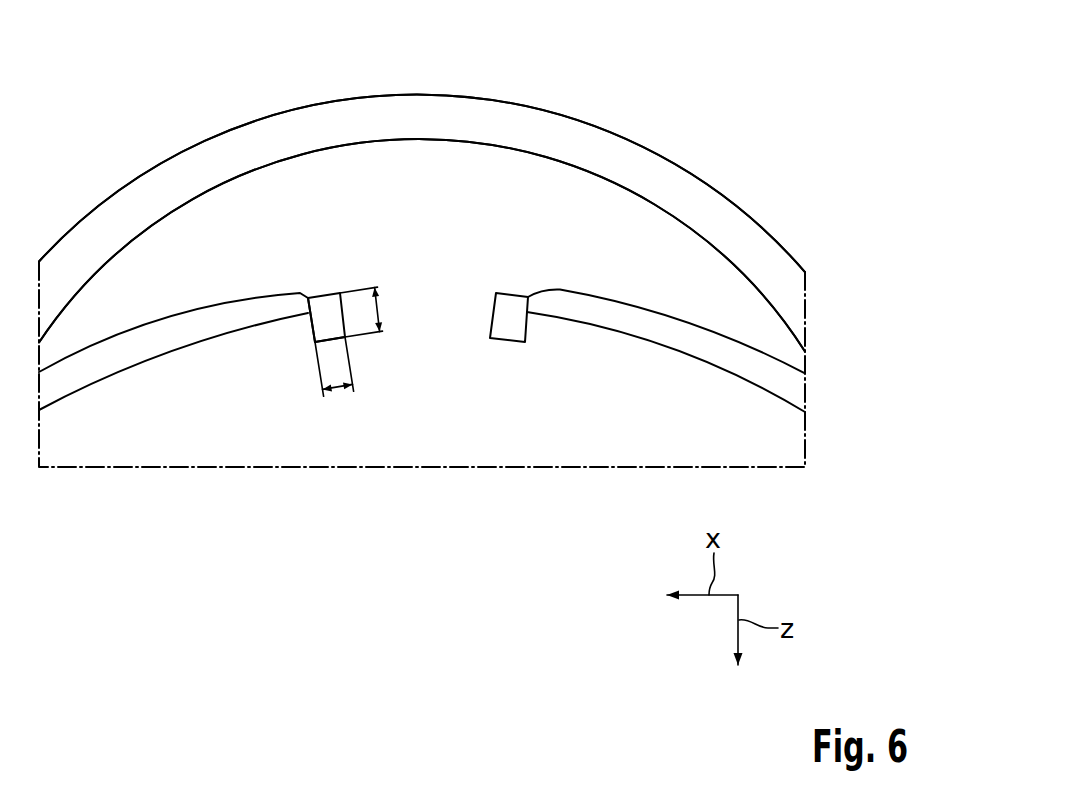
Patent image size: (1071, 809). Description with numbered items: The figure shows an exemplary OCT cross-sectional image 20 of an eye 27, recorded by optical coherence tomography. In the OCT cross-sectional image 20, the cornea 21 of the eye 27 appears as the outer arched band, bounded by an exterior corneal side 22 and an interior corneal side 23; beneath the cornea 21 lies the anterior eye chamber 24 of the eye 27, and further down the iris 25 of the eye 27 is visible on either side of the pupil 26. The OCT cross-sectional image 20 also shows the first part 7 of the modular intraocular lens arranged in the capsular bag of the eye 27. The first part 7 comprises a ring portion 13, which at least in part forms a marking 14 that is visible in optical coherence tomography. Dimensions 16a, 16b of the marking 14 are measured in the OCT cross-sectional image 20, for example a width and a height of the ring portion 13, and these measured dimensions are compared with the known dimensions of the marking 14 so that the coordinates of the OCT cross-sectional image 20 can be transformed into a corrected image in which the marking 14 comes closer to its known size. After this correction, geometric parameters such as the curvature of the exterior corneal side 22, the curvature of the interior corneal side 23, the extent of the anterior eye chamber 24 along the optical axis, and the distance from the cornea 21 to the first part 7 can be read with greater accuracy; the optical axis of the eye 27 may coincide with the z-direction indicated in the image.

The first part 7 is at (297, 325).
The ring portion 13 is at (325, 302).
The marking 14 is at (333, 342).
The dimension of the marking in the OCT cross-sectional image 16a is at (338, 395).
The dimension of the marking in the OCT cross-sectional image 16b is at (380, 320).
The OCT cross-sectional image 20 is at (820, 398).
The cornea 21 is at (450, 110).
The exterior corneal side 22 is at (517, 101).
The interior corneal side 23 is at (343, 147).
The anterior eye chamber 24 is at (575, 200).
The iris 25 is at (696, 327).
The pupil 26 is at (450, 298).
The eye 27 is at (714, 82).